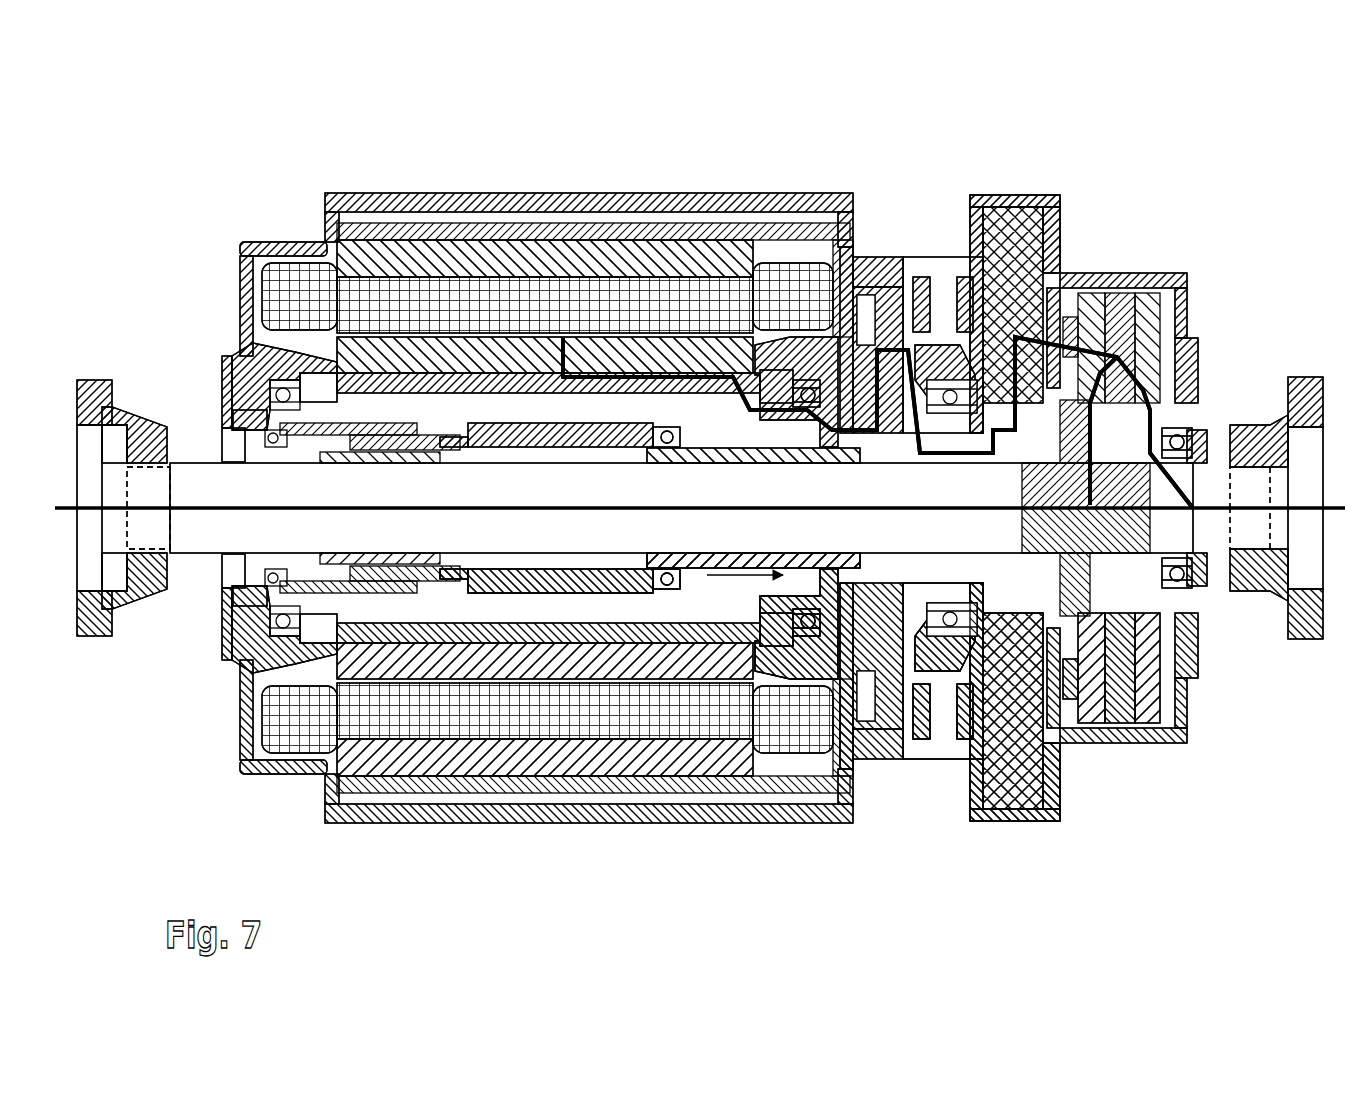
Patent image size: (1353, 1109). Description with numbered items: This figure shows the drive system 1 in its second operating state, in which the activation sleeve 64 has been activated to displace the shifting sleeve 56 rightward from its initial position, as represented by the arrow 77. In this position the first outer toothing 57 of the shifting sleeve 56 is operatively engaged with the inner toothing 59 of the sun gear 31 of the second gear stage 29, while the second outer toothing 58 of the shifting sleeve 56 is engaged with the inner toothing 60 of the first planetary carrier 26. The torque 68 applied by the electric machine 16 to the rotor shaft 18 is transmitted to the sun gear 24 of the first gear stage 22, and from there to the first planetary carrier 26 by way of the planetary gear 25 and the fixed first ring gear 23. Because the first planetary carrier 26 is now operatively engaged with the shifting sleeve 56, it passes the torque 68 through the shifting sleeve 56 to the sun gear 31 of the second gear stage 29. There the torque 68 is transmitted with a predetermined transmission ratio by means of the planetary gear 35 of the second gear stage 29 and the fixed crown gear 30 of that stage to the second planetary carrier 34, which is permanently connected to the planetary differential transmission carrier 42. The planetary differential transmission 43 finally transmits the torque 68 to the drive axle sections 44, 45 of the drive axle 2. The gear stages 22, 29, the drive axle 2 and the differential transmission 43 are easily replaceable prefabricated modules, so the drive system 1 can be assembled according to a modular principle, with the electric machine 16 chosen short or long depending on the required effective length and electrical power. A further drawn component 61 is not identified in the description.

The drive system 1 is at (294, 160).
The drive axle 2 is at (185, 457).
The electric machine 16 is at (537, 268).
The rotor shaft 18 is at (473, 373).
The first gear stage 22 is at (897, 265).
The first ring gear 23 is at (877, 259).
The sun gear 24 is at (880, 580).
The planetary gear 25 is at (886, 297).
The first planetary carrier 26 is at (907, 542).
The second gear stage 29 is at (1003, 198).
The crown gear 30 is at (1023, 223).
The sun gear 31 is at (1047, 580).
The second planetary carrier 34 is at (978, 322).
The planetary gear 35 is at (1027, 307).
The planetary differential transmission carrier 42 is at (1163, 330).
The planetary differential transmission 43 is at (1150, 287).
The drive axle section 44 is at (152, 530).
The drive axle section 45 is at (1257, 490).
The shifting sleeve 56 is at (698, 440).
The first outer toothing 57 is at (1047, 577).
The second outer toothing 58 is at (868, 570).
The inner toothing 59 is at (980, 567).
The inner toothing 60 is at (980, 570).
The bearing 61 is at (837, 610).
The activation sleeve 64 is at (228, 362).
The torque 68 is at (610, 370).
The arrow 77 is at (732, 578).